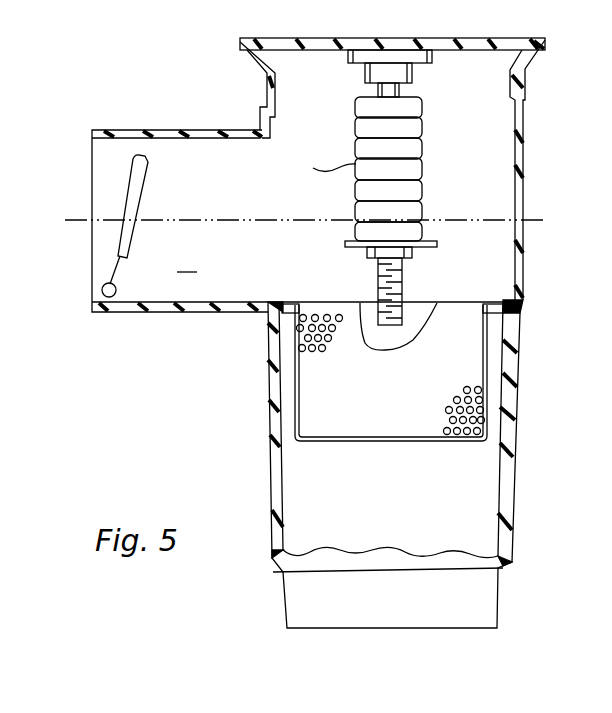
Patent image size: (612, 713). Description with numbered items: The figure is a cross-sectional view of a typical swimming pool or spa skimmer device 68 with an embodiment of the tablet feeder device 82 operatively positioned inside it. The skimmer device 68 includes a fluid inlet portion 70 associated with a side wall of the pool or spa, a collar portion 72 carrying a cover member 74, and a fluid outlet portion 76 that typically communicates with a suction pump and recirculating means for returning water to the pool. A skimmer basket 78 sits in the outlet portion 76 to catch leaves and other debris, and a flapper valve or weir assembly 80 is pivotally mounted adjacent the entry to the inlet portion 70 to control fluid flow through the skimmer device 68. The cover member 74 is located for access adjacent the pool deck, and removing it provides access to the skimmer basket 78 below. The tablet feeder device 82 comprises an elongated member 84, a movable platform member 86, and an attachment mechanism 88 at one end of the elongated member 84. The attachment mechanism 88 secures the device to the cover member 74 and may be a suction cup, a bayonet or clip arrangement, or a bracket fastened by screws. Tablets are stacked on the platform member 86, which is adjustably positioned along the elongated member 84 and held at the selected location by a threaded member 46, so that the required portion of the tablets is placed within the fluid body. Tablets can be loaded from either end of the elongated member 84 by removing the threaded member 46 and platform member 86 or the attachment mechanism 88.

The threaded member 46 is at (367, 257).
The skimmer device 68 is at (131, 89).
The fluid inlet portion 70 is at (112, 167).
The collar portion 72 is at (262, 98).
The cover member 74 is at (483, 42).
The fluid outlet portion 76 is at (518, 470).
The skimmer basket 78 is at (296, 403).
The flapper valve or weir assembly 80 is at (140, 196).
The tablet feeder device embodiment 82 is at (448, 124).
The elongated member 84 is at (402, 288).
The platform member 86 is at (437, 243).
The attachment mechanism 88 is at (348, 56).